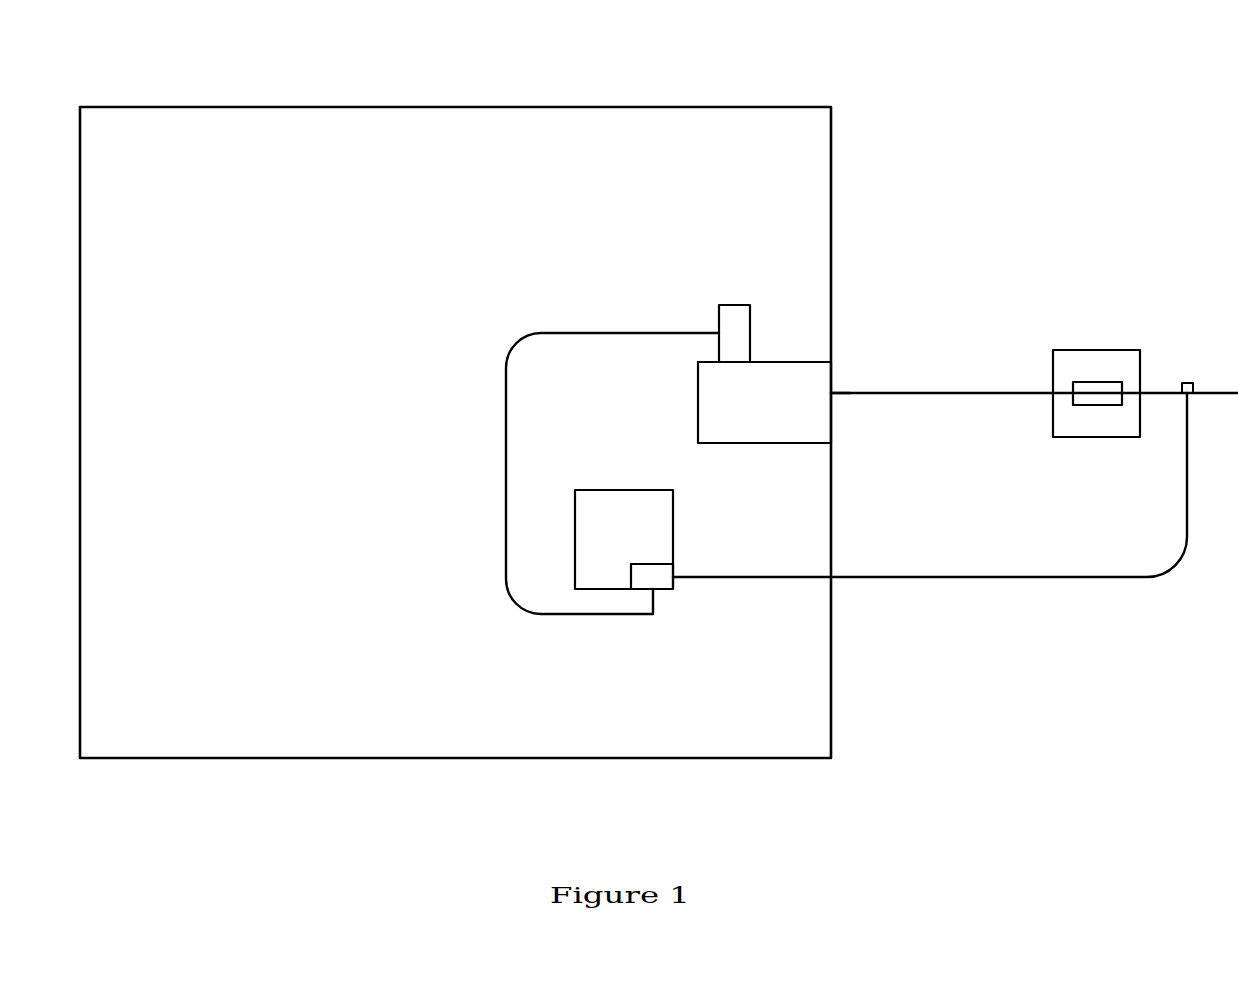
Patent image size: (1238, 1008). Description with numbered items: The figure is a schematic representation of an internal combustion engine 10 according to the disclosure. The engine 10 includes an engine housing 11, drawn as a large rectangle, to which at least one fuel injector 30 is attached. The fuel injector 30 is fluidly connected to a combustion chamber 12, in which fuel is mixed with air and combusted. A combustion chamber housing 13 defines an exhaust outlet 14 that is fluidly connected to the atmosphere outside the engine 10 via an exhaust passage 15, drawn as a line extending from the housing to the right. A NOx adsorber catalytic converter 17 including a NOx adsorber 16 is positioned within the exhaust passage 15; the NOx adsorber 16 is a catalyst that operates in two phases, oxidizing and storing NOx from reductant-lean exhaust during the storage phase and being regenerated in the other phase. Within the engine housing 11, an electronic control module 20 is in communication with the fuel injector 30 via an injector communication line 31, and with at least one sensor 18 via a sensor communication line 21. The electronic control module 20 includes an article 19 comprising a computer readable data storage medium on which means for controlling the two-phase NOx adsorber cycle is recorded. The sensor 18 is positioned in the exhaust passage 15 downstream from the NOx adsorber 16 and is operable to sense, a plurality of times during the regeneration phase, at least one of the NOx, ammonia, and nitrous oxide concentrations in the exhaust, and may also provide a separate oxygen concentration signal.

The internal combustion engine 10 is at (803, 82).
The engine housing 11 is at (831, 258).
The combustion chamber 12 is at (767, 360).
The combustion chamber housing 13 is at (770, 444).
The exhaust outlet 14 is at (833, 394).
The exhaust passage 15 is at (915, 393).
The NOx adsorber 16 is at (1093, 382).
The NOx adsorber catalytic converter 17 is at (1108, 437).
The sensor 18 is at (1186, 383).
The article 19 is at (659, 590).
The electronic control module 20 is at (624, 539).
The sensor communication line 21 is at (990, 578).
The fuel injector 30 is at (719, 322).
The injector communication line 31 is at (506, 502).